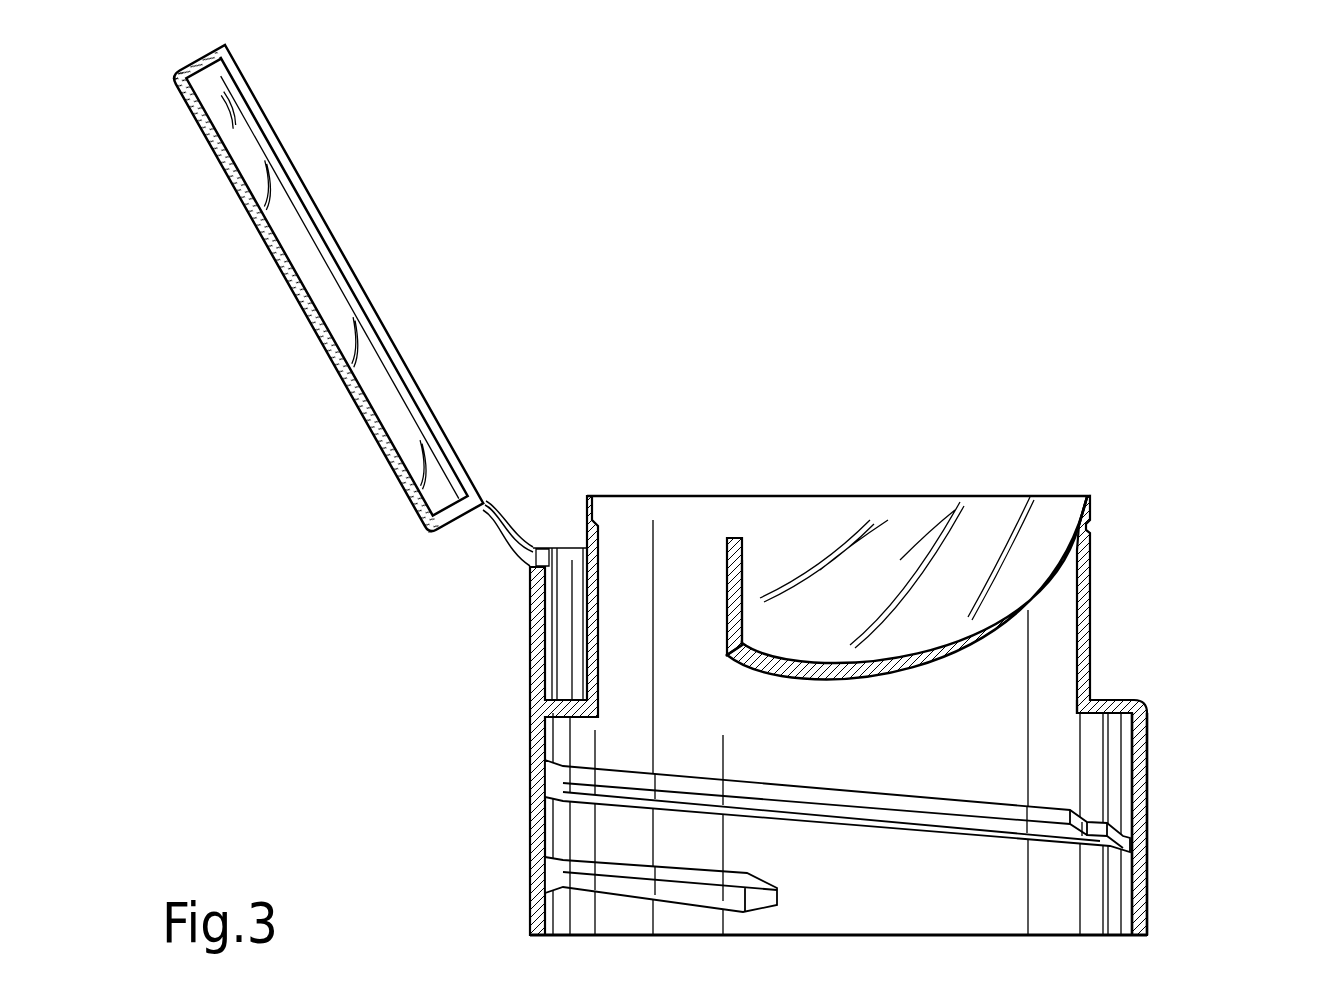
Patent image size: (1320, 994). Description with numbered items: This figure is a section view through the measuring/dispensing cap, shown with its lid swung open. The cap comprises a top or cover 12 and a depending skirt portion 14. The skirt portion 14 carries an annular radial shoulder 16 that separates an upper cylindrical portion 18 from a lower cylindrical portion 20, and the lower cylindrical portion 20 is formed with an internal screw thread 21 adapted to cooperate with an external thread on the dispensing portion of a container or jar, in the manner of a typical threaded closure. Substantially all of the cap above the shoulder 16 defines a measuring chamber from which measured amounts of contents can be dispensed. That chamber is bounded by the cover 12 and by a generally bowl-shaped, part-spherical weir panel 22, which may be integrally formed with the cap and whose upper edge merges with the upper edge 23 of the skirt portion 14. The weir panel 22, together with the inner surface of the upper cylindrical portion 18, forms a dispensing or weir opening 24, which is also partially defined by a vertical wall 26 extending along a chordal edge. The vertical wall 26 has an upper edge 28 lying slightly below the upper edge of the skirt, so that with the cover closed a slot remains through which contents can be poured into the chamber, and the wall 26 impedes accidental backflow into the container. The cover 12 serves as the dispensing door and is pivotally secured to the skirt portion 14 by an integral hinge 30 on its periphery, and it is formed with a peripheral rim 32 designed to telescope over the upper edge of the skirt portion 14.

The top or cover 12 is at (436, 267).
The depending skirt portion 14 is at (912, 662).
The annular radial shoulder 16 is at (1103, 698).
The upper cylindrical portion 18 is at (1093, 622).
The lower cylindrical portion 20 is at (1150, 790).
The internal screw thread 21 is at (902, 828).
The weir panel 22 is at (907, 662).
The upper edge of the skirt portion 23 is at (1098, 462).
The dispensing or weir opening 24 is at (693, 542).
The vertical wall 26 is at (745, 600).
The upper edge of the vertical wall 28 is at (732, 537).
The hinge 30 is at (503, 533).
The peripheral rim 32 is at (321, 503).